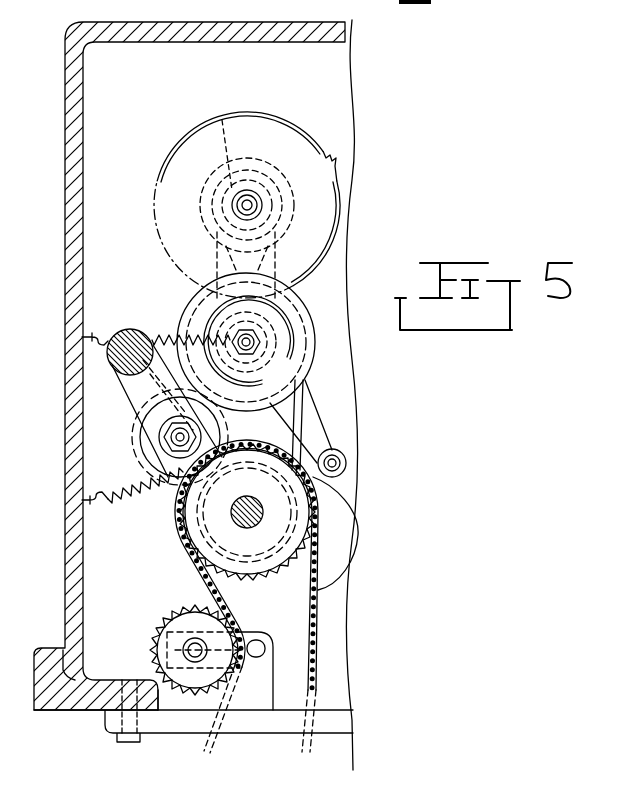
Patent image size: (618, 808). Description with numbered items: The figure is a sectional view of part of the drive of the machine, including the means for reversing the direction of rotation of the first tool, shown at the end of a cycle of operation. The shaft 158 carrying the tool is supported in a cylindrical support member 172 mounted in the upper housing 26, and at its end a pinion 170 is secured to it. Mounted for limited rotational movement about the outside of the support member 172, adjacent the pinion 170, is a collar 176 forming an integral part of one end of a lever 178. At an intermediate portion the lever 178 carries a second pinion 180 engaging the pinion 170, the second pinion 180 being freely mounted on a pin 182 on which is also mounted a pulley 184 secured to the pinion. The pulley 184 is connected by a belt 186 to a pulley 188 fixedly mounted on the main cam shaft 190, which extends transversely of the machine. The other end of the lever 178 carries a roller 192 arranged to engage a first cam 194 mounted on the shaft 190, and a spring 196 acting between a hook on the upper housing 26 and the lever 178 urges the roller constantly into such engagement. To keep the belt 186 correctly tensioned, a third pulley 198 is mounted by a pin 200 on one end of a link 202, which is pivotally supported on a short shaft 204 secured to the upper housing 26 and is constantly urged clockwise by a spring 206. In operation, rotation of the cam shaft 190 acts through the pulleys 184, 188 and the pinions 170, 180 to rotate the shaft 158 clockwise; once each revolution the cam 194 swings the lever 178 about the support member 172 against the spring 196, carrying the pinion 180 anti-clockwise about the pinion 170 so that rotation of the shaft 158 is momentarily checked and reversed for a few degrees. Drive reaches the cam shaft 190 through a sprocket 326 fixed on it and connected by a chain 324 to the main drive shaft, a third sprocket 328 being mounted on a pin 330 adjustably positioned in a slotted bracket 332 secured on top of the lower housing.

The upper housing 26 is at (65, 283).
The pinion 170 is at (301, 121).
The collar 176 is at (228, 124).
The cylindrical support member 172 is at (212, 178).
The shaft 158 is at (240, 206).
The lever 178 is at (222, 270).
The second pinion 180 is at (291, 334).
The pulley 184 is at (300, 313).
The pin 182 is at (250, 343).
The belt 186 is at (312, 381).
The spring 196 is at (171, 333).
The short shaft 204 is at (117, 360).
The link 202 is at (135, 393).
The pin 200 is at (176, 437).
The third pulley 198 is at (152, 456).
The spring 206 is at (132, 496).
The roller 192 is at (346, 462).
The first cam 194 is at (355, 531).
The pulley 188 is at (206, 544).
The main cam shaft 190 is at (260, 500).
The sprocket 326 is at (252, 582).
The chain 324 is at (318, 656).
The third sprocket 328 is at (167, 615).
The pin 330 is at (192, 650).
The slotted bracket 332 is at (262, 701).